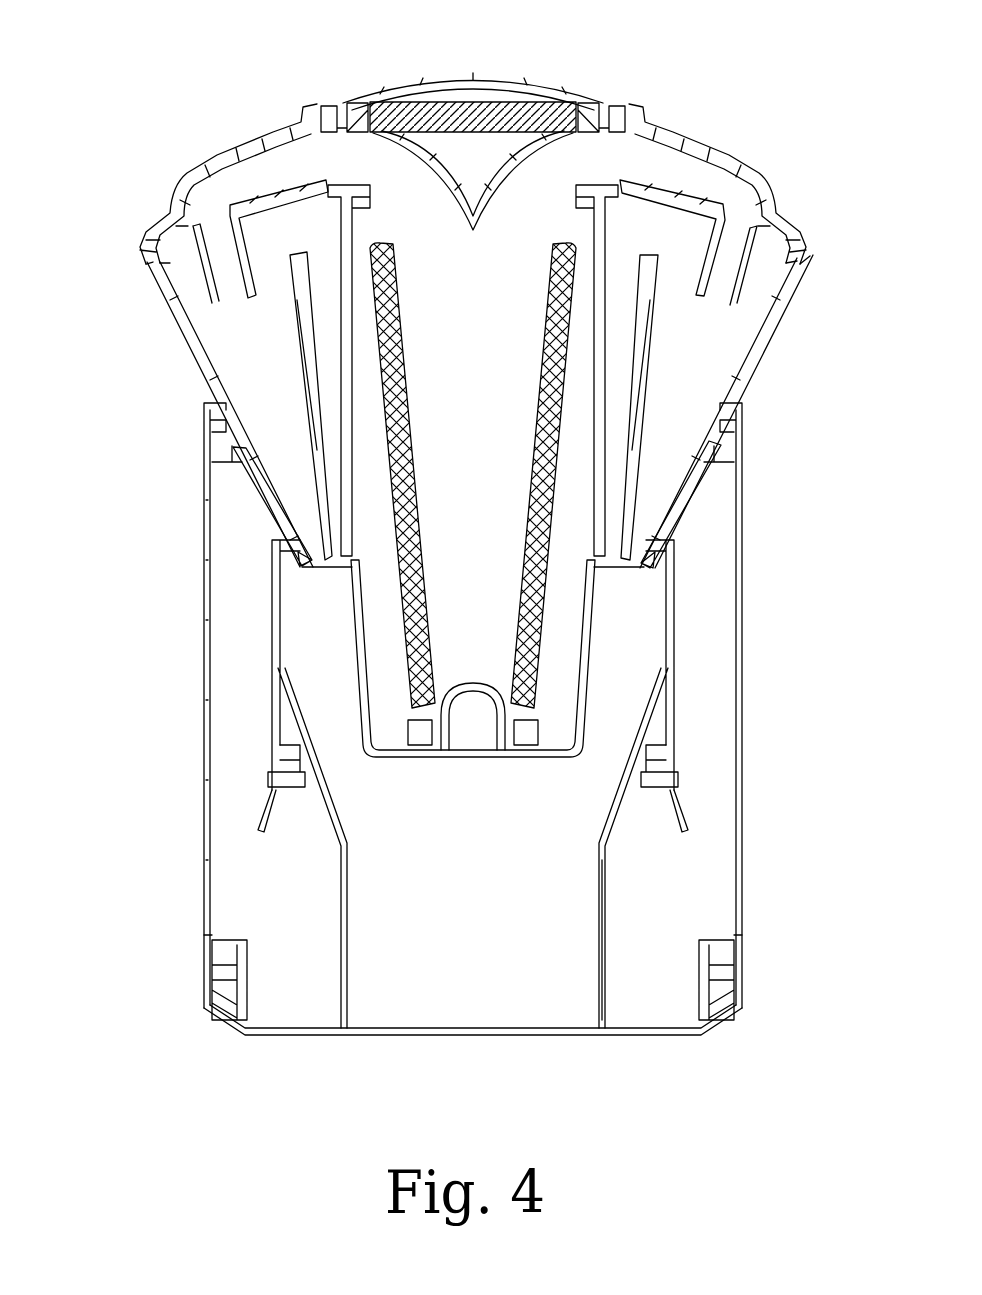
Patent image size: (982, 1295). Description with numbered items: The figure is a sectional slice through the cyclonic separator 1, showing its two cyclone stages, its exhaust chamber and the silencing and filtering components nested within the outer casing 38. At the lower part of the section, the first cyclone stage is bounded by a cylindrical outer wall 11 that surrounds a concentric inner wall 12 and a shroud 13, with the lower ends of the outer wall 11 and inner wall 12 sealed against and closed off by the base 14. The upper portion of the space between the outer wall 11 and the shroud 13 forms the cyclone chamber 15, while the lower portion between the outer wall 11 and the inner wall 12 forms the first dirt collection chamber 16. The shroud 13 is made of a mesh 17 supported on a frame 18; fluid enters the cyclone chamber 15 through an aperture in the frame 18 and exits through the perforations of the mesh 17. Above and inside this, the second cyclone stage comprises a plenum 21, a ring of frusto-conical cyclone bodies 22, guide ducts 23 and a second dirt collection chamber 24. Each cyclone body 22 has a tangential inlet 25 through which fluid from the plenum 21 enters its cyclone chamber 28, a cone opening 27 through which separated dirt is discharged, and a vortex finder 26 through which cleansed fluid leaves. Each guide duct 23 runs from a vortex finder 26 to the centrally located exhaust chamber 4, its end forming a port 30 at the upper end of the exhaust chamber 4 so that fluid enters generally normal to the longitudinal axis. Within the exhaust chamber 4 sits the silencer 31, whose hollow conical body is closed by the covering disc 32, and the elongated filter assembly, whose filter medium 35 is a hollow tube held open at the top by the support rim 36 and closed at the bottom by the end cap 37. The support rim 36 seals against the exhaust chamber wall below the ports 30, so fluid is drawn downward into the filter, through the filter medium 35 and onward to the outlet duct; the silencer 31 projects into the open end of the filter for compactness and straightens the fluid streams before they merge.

The cyclonic separator 1 is at (125, 102).
The exhaust chamber 4 is at (485, 370).
The outer wall 11 is at (742, 805).
The inner wall 12 is at (606, 903).
The shroud 13 is at (272, 675).
The base 14 is at (525, 1036).
The cyclone chamber 15 is at (230, 545).
The first dirt collection chamber 16 is at (285, 915).
The mesh 17 is at (676, 703).
The frame 18 is at (680, 513).
The plenum 21 is at (622, 372).
The cyclone body 22 is at (800, 287).
The guide duct 23 is at (745, 182).
The second dirt collection chamber 24 is at (494, 996).
The tangential inlet 25 is at (295, 236).
The vortex finder 26 is at (205, 290).
The cone opening 27 is at (322, 575).
The cyclone chamber 28 is at (282, 392).
The port 30 is at (622, 150).
The silencer 31 is at (488, 206).
The covering disc 32 is at (552, 102).
The filter medium 35 is at (424, 462).
The support rim 36 is at (362, 190).
The end cap 37 is at (474, 681).
The outer casing 38 is at (475, 84).